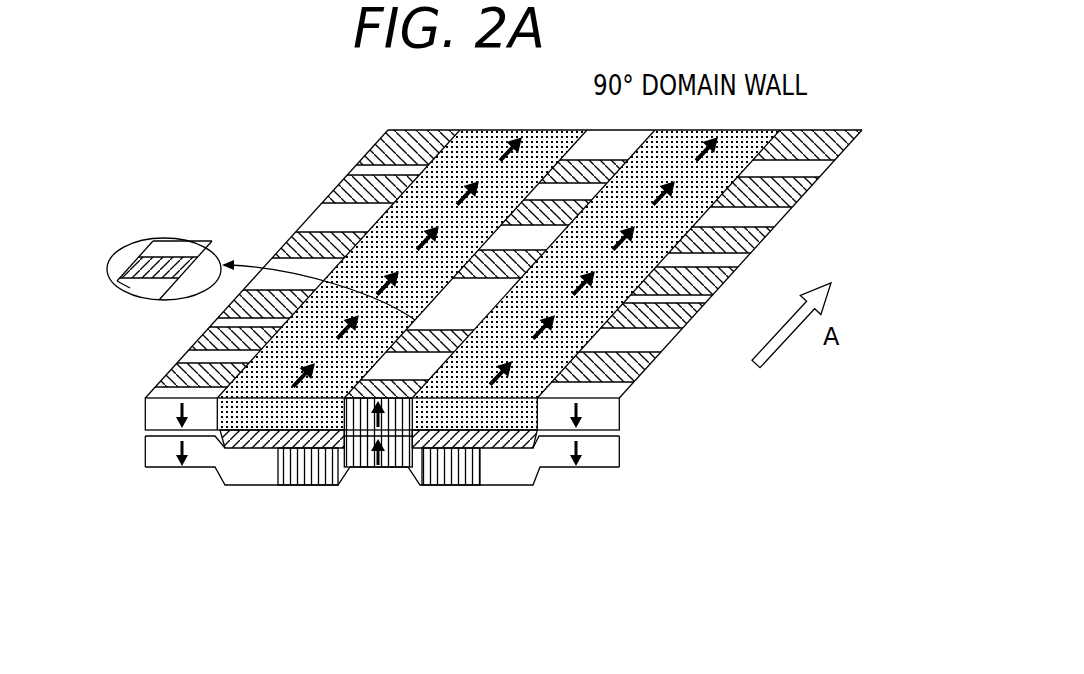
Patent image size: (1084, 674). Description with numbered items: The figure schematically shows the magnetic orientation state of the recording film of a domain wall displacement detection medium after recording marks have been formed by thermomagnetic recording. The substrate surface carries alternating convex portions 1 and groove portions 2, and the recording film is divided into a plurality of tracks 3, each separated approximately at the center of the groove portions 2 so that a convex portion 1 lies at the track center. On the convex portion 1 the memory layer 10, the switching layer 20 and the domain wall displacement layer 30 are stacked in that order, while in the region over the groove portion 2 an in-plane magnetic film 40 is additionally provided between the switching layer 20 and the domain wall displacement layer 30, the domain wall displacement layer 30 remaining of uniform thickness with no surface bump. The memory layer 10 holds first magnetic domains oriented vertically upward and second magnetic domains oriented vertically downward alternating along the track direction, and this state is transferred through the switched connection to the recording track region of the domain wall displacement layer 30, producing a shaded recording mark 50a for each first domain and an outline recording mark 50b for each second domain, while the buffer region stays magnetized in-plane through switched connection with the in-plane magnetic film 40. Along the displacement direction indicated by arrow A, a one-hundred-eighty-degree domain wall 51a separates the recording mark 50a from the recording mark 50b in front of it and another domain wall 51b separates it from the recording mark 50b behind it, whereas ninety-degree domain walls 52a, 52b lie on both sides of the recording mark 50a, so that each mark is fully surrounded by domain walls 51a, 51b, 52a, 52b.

The convex portion 1 is at (358, 477).
The groove portion 2 is at (253, 488).
The track 3 is at (480, 503).
The memory layer 10 is at (621, 437).
The switching layer 20 is at (615, 433).
The domain wall displacement layer 30 is at (621, 398).
The in-plane magnetic film 40 is at (213, 455).
The recording mark 50a is at (130, 247).
The recording mark 50b is at (115, 280).
The domain wall 51a is at (182, 256).
The domain wall 51b is at (153, 290).
The domain wall 52a is at (148, 240).
The domain wall 52b is at (214, 262).